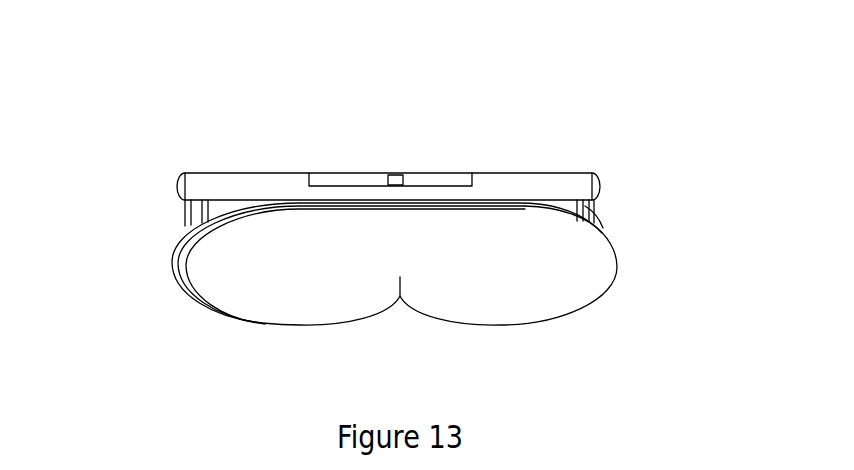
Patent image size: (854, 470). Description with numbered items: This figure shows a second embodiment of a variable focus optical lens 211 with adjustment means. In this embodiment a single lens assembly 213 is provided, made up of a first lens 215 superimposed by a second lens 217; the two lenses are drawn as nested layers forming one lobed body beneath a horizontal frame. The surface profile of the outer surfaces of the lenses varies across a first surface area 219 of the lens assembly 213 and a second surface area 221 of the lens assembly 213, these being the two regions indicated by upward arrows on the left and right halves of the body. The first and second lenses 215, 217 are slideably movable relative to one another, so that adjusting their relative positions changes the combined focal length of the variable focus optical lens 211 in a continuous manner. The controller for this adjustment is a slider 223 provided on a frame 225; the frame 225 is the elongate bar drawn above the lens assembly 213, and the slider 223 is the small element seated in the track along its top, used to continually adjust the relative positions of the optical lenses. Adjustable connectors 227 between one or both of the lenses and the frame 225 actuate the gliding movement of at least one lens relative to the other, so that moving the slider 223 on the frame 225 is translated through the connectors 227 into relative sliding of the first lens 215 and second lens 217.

The variable focus optical lens 211 is at (140, 138).
The single lens assembly 213 is at (604, 340).
The first lens 215 is at (185, 265).
The second lens 217 is at (176, 255).
The first surface area 219 is at (301, 292).
The second surface area 221 is at (509, 292).
The slider 223 is at (387, 174).
The frame 225 is at (495, 173).
The adjustable connectors 227 is at (596, 207).